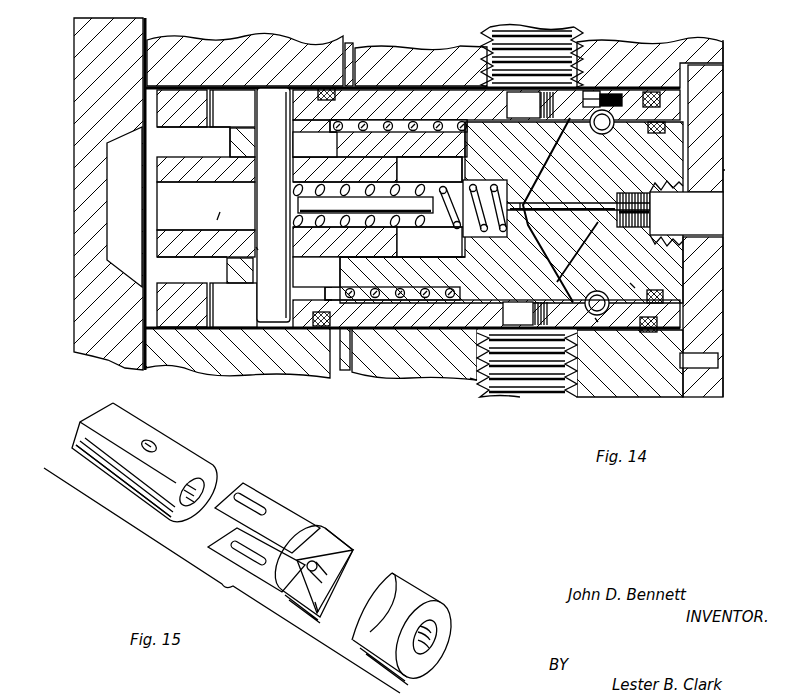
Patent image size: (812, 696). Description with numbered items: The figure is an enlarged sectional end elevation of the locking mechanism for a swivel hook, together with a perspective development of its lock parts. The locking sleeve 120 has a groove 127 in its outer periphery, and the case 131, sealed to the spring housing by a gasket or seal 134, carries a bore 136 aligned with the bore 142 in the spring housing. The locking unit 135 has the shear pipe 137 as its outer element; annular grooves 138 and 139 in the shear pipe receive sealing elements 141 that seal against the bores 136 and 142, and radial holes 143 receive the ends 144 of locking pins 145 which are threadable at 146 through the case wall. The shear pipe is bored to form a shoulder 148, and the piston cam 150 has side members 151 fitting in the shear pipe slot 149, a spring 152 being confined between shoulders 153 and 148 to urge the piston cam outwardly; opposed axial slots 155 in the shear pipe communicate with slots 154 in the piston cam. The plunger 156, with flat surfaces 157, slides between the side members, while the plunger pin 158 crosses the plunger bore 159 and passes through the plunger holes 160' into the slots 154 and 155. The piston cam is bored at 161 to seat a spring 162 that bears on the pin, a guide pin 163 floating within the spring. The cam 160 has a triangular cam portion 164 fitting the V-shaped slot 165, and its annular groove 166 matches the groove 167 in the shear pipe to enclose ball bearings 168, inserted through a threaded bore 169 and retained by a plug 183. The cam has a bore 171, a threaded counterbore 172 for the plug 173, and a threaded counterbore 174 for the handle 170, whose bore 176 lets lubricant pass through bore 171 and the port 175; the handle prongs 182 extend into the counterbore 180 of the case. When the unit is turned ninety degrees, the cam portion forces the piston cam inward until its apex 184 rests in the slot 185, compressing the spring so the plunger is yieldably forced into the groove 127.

In FIG. 14, the locking sleeve 120 is at (90, 345).
In FIG. 14, the groove 127 is at (127, 192).
In FIG. 14, the case 131 is at (687, 43).
In FIG. 14, the gasket or seal 134 is at (348, 44).
In FIG. 14, the locking unit 135 is at (727, 173).
In FIG. 14, the bore 136 is at (652, 92).
In FIG. 14, the shear pipe 137 is at (408, 100).
In FIG. 14, the annular groove 138 is at (648, 333).
In FIG. 14, the annular groove 139 is at (343, 340).
In FIG. 14, the sealing elements 141 is at (318, 340).
In FIG. 14, the bore 142 is at (325, 88).
In FIG. 14, the radial holes or bores 143 is at (520, 324).
In FIG. 14, the ends 144 is at (540, 292).
In FIG. 14, the locking pins 145 is at (517, 396).
In FIG. 14, the threads 146 is at (471, 378).
In FIG. 14, the shoulder 148 is at (315, 145).
In FIG. 14, the shear pipe slot 149 is at (170, 128).
In FIG. 14, the piston cam 150 is at (460, 153).
In FIG. 15, the piston cam 150 is at (333, 522).
In FIG. 14, the side members 151 is at (430, 150).
In FIG. 15, the side members 151 is at (293, 523).
In FIG. 14, the spring 152 is at (337, 290).
In FIG. 14, the shoulder 153 is at (462, 128).
In FIG. 14, the slots 154 is at (340, 143).
In FIG. 15, the slots 154 is at (260, 500).
In FIG. 14, the axially extending slots 155 is at (251, 114).
In FIG. 14, the plunger 156 is at (206, 220).
In FIG. 15, the plunger 156 is at (113, 460).
In FIG. 14, the flat surfaces 157 is at (211, 185).
In FIG. 15, the flat surfaces 157 is at (130, 420).
In FIG. 14, the plunger pin 158 is at (268, 230).
In FIG. 14, the plunger bore 159 is at (243, 224).
In FIG. 15, the plunger bore 159 is at (213, 482).
In FIG. 14, the cam 160 is at (511, 212).
In FIG. 15, the cam 160 is at (413, 627).
In FIG. 14, the plunger holes 160' is at (274, 256).
In FIG. 15, the plunger holes 160' is at (174, 438).
In FIG. 14, the bore 161 is at (496, 149).
In FIG. 14, the spring 162 is at (432, 233).
In FIG. 14, the guide pin 163 is at (396, 204).
In FIG. 14, the cam portion 164 is at (598, 223).
In FIG. 15, the cam portion 164 is at (395, 590).
In FIG. 14, the slot 165 is at (530, 105).
In FIG. 14, the annular peripheral groove 166 is at (632, 284).
In FIG. 14, the annular groove 167 is at (594, 318).
In FIG. 14, the ball bearings 168 is at (594, 292).
In FIG. 14, the threaded bore 169 is at (583, 90).
In FIG. 14, the handle 170 is at (723, 275).
In FIG. 14, the bore 171 is at (552, 196).
In FIG. 14, the threaded counterbore 172 is at (630, 197).
In FIG. 14, the plug 173 is at (648, 209).
In FIG. 14, the threaded counterbore 174 is at (680, 172).
In FIG. 15, the threaded counterbore 174 is at (440, 635).
In FIG. 14, the port 175 is at (507, 216).
In FIG. 15, the port 175 is at (328, 588).
In FIG. 14, the bore 176 is at (686, 213).
In FIG. 14, the counterbore 180 is at (712, 356).
In FIG. 14, the prongs 182 is at (725, 90).
In FIG. 14, the plug 183 is at (622, 96).
In FIG. 14, the apex 184 is at (538, 200).
In FIG. 15, the apex 184 is at (380, 578).
In FIG. 14, the slot 185 is at (566, 135).
In FIG. 15, the slot 185 is at (318, 612).